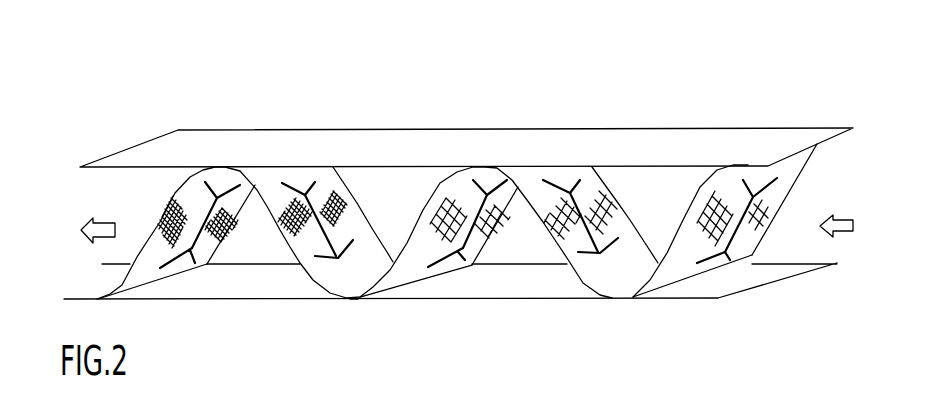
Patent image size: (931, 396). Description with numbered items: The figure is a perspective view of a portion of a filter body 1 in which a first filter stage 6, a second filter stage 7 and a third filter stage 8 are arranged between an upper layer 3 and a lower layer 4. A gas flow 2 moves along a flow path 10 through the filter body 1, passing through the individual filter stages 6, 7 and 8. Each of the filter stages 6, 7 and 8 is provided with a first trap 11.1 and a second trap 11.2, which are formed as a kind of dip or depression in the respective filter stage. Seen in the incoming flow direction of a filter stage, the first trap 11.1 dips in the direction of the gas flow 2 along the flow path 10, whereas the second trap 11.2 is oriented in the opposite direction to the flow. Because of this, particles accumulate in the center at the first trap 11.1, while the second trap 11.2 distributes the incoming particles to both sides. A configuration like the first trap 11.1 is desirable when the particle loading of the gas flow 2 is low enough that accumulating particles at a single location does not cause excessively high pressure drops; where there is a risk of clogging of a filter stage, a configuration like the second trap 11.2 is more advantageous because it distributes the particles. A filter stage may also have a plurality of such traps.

The filter body 1 is at (591, 110).
The gas flow 2 is at (848, 222).
The upper layer 3 is at (742, 143).
The lower layer 4 is at (736, 289).
The first filter stage 6 is at (787, 244).
The second filter stage 7 is at (510, 281).
The third filter stage 8 is at (251, 282).
The flow path 10 is at (410, 190).
The first trap 11.1 is at (312, 194).
The second trap 11.2 is at (206, 243).